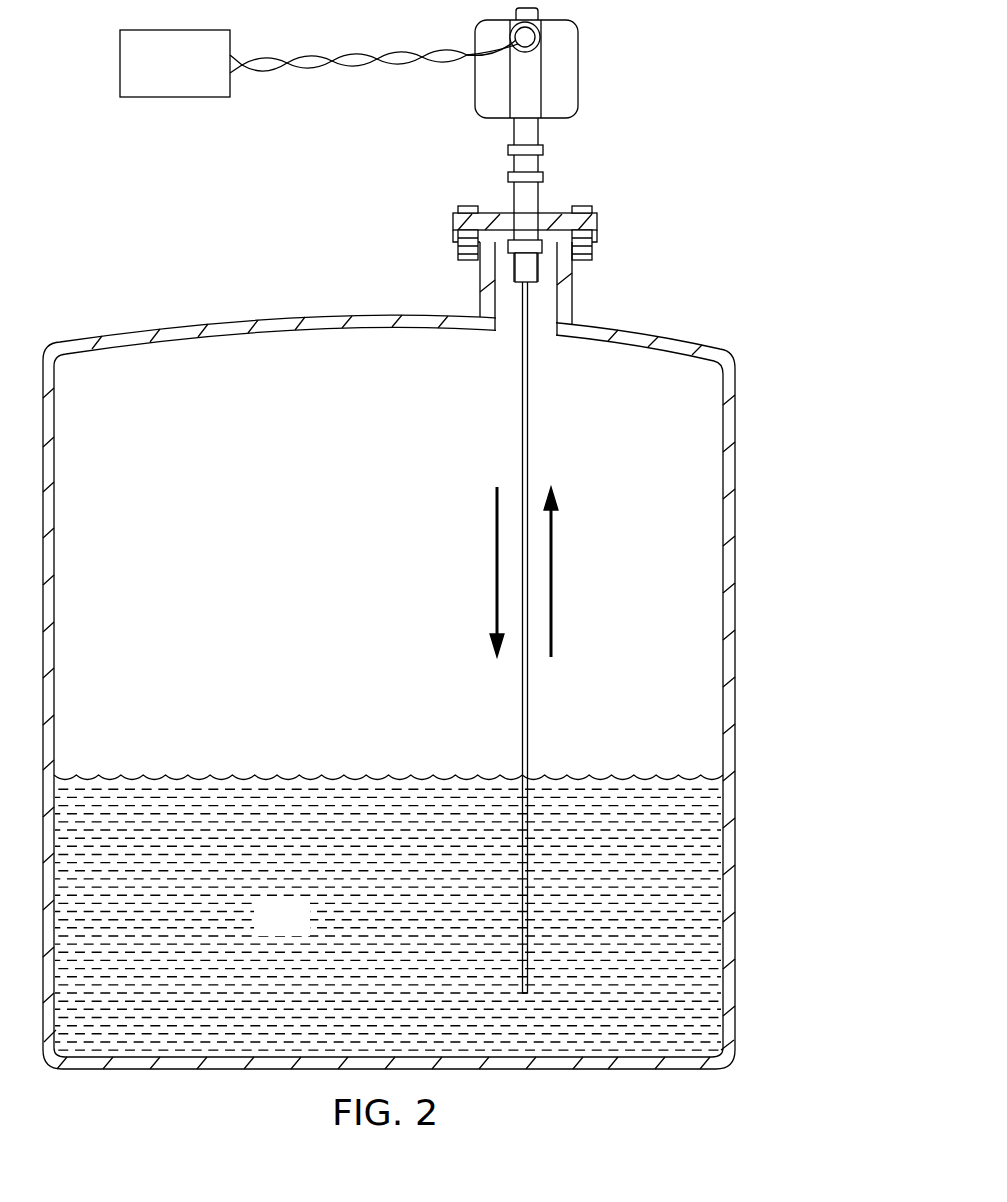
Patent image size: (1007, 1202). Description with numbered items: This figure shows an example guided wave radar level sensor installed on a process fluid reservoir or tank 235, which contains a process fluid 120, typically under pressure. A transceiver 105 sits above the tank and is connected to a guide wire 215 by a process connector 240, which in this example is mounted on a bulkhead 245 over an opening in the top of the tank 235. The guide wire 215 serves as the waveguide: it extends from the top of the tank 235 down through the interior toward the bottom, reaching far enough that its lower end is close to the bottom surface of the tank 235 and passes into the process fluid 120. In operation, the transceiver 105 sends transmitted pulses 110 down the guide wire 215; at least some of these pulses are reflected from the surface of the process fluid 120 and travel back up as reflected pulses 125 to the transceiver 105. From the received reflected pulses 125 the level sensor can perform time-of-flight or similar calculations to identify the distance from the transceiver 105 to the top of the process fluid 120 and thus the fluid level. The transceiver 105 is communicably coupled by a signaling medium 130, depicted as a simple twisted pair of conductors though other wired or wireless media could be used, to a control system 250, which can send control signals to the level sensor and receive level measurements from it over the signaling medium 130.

The transceiver 105 is at (579, 69).
The transmitted pulses 110 is at (494, 573).
The process fluid 120 is at (303, 930).
The reflected pulses 125 is at (553, 573).
The signaling medium 130 is at (378, 68).
The guide wire 215 is at (530, 420).
The tank 235 is at (634, 1073).
The process connector 240 is at (538, 200).
The bulkhead 245 is at (497, 226).
The control system 250 is at (120, 63).